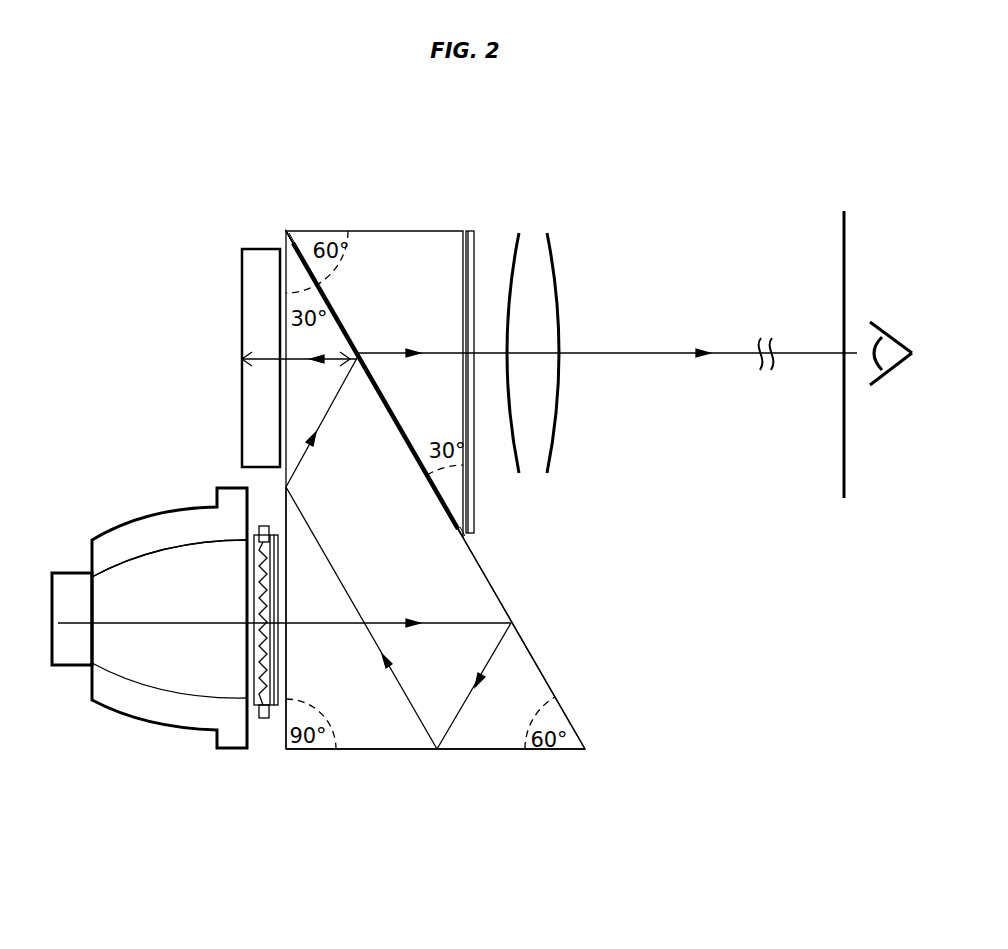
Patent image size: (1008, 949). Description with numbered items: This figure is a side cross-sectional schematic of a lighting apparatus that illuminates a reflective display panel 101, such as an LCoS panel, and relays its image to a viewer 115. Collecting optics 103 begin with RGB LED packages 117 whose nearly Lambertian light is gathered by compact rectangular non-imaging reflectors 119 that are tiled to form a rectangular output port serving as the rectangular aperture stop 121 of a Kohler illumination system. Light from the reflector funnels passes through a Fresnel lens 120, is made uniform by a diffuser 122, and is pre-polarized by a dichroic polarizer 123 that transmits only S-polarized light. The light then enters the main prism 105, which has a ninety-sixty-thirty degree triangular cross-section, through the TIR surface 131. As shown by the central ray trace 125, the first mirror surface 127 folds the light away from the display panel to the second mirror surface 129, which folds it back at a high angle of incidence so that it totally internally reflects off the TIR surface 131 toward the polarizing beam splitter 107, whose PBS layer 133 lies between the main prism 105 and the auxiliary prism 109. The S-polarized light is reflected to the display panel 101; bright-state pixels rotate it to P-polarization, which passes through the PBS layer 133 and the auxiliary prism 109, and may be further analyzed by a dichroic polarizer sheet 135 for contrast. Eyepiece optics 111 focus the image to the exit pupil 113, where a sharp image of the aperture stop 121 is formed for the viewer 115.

The display panel 101 is at (242, 277).
The collecting optics 103 is at (131, 494).
The prism 105 is at (563, 750).
The polarizing beam splitter 107 is at (286, 231).
The auxiliary prism 109 is at (418, 231).
The eyepiece optics 111 is at (558, 261).
The exit pupil 113 is at (844, 241).
The viewer 115 is at (895, 380).
The RGB LED package 117 is at (73, 585).
The non-imaging reflector 119 is at (148, 708).
The Fresnel lens 120 is at (252, 588).
The rectangular aperture stop 121 is at (262, 526).
The diffuser 122 is at (265, 712).
The dichroic polarizer 123 is at (275, 708).
The central ray trace 125 is at (306, 457).
The first mirror surface 127 is at (493, 585).
The second mirror surface 129 is at (463, 750).
The TIR surface 131 is at (287, 668).
The reflective coating / mirror 133 is at (352, 338).
The dichroic polarizer sheet 135 is at (474, 232).